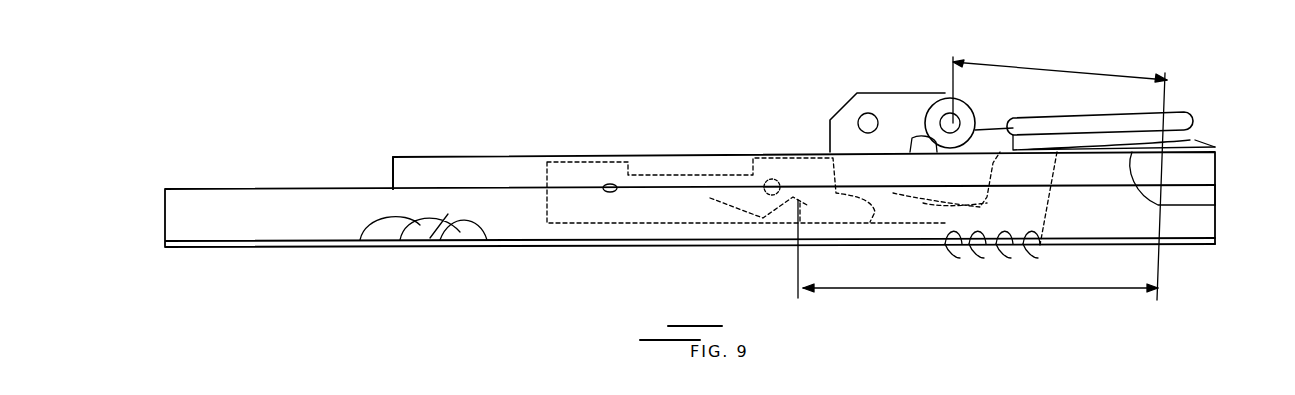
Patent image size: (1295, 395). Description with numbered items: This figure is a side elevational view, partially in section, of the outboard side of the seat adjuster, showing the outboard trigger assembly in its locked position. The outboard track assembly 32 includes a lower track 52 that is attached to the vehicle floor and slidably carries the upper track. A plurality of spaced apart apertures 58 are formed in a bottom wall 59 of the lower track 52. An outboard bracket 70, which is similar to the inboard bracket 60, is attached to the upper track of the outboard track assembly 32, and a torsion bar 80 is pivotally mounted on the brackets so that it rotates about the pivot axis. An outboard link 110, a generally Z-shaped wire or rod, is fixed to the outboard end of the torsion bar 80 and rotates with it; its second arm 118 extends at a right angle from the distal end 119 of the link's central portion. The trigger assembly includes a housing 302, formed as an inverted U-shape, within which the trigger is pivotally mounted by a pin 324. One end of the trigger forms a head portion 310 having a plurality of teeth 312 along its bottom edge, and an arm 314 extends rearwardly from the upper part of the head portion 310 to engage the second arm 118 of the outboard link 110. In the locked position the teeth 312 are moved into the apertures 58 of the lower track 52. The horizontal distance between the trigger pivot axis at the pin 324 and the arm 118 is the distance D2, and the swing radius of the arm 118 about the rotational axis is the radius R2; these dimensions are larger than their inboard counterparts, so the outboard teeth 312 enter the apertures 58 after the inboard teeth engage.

The outboard track assembly 32 is at (713, 82).
The lower track 52 is at (270, 210).
The apertures 58 is at (395, 232).
The bottom wall 59 is at (470, 232).
The inboard bracket 60 is at (420, 172).
The outboard bracket 70 is at (875, 98).
The torsion bar 80 is at (930, 100).
The outboard link 110 is at (988, 125).
The second arm 118 is at (1200, 143).
The distal end 119 is at (1215, 200).
The housing 302 is at (657, 228).
The head portion 310 is at (1013, 125).
The teeth 312 is at (1032, 252).
The arm 314 is at (1122, 120).
The pin 324 is at (743, 222).
The swing radius R2 is at (1075, 70).
The distance D2 is at (892, 290).